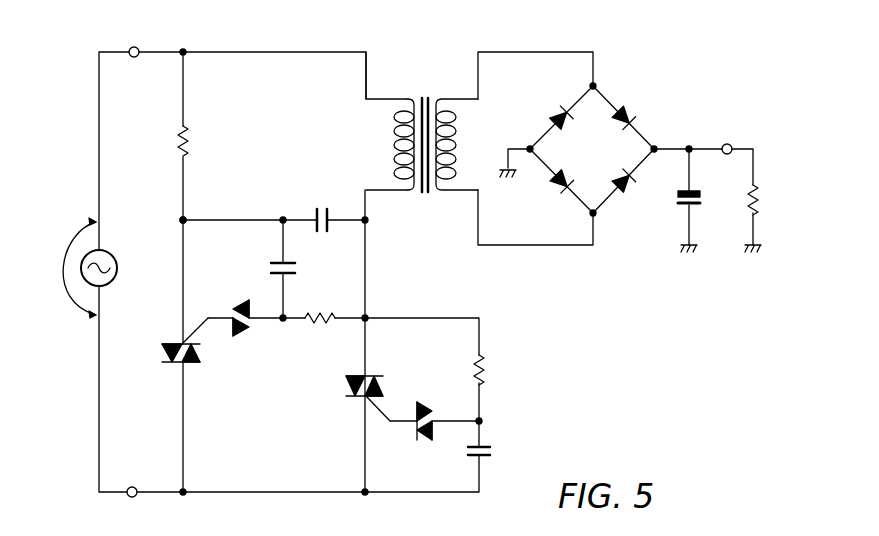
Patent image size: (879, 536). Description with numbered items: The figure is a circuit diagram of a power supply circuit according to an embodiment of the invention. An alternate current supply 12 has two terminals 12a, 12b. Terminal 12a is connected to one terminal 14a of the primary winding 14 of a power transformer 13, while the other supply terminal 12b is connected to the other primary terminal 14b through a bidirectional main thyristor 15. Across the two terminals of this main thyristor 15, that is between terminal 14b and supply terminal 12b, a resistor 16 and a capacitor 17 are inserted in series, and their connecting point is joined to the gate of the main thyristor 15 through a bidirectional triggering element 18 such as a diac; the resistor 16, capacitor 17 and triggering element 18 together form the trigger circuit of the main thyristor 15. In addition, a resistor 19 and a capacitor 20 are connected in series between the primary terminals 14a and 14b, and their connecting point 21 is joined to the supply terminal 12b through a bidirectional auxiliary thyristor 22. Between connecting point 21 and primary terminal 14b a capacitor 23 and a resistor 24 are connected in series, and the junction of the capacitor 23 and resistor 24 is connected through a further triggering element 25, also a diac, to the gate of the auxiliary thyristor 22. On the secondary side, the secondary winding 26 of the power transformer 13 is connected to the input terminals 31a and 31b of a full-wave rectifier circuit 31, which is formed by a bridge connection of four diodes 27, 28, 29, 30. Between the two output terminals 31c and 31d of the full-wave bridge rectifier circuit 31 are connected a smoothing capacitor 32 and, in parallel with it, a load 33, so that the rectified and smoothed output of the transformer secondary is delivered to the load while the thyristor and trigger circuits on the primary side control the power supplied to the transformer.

The alternate current supply 12 is at (118, 270).
The terminal of the ac supply 12a is at (134, 47).
The terminal of the ac supply 12b is at (132, 497).
The power transformer 13 is at (427, 92).
The primary winding 14 is at (394, 134).
The terminal of the primary winding 14a is at (391, 98).
The terminal of the primary winding 14b is at (392, 190).
The bidirectional main thyristor 15 is at (346, 386).
The resistor 16 is at (484, 370).
The capacitor 17 is at (492, 451).
The bidirectional triggering element 18 is at (424, 403).
The resistor 19 is at (188, 143).
The capacitor 20 is at (322, 208).
The connecting point 21 is at (180, 220).
The bidirectional auxiliary thyristor 22 is at (163, 352).
The capacitor 23 is at (298, 268).
The resistor 24 is at (322, 324).
The triggering element 25 is at (240, 300).
The secondary winding 26 is at (456, 140).
The diode 27 is at (616, 130).
The diode 28 is at (630, 195).
The diode 29 is at (557, 191).
The diode 30 is at (566, 131).
The full-wave rectifier circuit 31 is at (603, 142).
The input terminal of the rectifier circuit 31a is at (594, 82).
The input terminal of the rectifier circuit 31b is at (594, 216).
The output terminal of the rectifier circuit 31c is at (530, 146).
The output terminal of the rectifier circuit 31d is at (656, 146).
The smoothing capacitor 32 is at (701, 198).
The load 33 is at (759, 198).